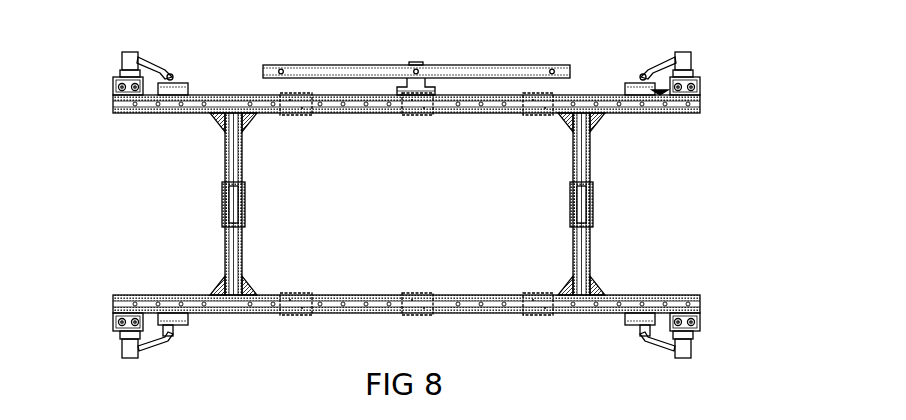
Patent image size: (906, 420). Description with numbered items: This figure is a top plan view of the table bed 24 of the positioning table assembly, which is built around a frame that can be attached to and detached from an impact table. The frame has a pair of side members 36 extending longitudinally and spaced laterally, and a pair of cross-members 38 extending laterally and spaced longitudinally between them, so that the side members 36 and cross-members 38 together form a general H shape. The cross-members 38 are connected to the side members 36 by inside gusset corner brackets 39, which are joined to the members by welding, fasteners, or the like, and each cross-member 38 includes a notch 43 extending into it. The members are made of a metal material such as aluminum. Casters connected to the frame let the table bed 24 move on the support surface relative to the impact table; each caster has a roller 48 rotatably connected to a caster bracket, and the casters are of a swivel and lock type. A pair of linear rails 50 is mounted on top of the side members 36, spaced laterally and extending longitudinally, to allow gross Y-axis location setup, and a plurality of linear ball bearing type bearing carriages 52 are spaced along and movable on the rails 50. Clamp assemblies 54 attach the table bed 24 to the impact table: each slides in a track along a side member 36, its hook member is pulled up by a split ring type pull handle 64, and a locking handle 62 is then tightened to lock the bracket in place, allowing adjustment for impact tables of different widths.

The table bed 24 is at (206, 95).
The side member 36 is at (241, 95).
The cross-member 38 is at (243, 150).
The inside gusset corner bracket 39 is at (216, 122).
The notch 43 is at (246, 204).
The roller 48 is at (129, 52).
The rail 50 is at (607, 100).
The bearing carriage 52 is at (296, 110).
The clamp assembly 54 is at (633, 83).
The lever arm 62 is at (652, 70).
The pull handle 64 is at (656, 93).